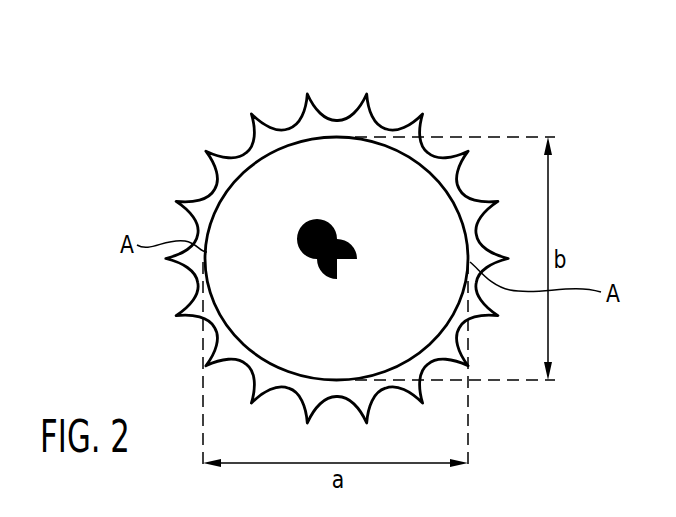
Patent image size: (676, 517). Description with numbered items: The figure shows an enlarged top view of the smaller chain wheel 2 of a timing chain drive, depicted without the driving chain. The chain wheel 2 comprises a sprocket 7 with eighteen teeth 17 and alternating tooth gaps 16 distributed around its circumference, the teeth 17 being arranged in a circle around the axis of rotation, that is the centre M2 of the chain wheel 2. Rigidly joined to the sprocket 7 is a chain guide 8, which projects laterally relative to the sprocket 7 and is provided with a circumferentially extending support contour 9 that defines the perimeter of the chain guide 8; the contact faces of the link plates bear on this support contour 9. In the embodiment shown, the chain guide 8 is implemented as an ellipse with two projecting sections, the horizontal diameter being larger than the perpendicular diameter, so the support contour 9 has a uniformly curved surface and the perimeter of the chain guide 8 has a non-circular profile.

The chain wheel 2 is at (198, 137).
The sprocket 7 is at (270, 119).
The chain guide 8 is at (362, 172).
The support contour 9 is at (408, 150).
The tooth gaps 16 is at (337, 120).
The teeth 17 is at (302, 97).
The centre M2 is at (338, 262).